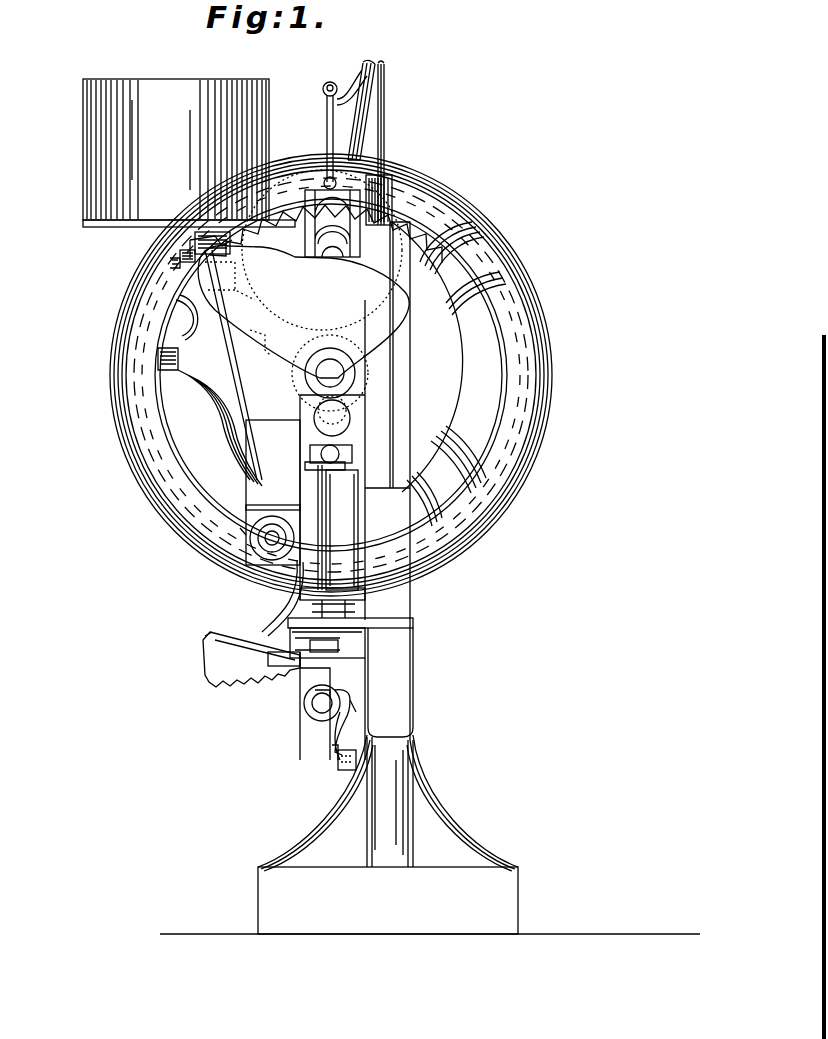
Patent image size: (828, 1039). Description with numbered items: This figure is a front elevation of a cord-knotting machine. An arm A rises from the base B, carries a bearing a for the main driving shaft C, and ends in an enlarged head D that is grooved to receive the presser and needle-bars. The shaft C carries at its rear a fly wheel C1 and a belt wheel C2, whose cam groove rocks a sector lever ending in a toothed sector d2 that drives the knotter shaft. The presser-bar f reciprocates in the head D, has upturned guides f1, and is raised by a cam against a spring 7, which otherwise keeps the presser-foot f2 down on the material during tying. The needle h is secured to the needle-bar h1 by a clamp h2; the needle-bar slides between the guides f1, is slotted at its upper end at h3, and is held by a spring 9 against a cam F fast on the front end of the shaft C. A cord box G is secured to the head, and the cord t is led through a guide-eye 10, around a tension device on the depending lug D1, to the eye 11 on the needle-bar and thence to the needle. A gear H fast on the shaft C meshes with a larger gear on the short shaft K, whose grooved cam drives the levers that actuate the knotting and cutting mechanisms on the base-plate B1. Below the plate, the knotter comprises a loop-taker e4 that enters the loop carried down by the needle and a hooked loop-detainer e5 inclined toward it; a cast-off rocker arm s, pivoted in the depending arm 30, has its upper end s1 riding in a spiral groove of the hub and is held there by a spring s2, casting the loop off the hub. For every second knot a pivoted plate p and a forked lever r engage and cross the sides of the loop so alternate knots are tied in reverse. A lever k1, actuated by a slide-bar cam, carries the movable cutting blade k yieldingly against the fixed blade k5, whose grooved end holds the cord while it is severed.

The cord receptacle or box G is at (86, 183).
The cam F is at (175, 275).
The cord t is at (190, 300).
The bearing a is at (268, 372).
The enlarged head D is at (248, 505).
The guide-eye 10 is at (246, 540).
The depending ear or lug D1 is at (258, 555).
The presser-bar f is at (345, 532).
The slot in needle-bar h3 is at (325, 200).
The spring 9 is at (370, 86).
The needle-bar h1 is at (345, 240).
The spring 7 is at (378, 222).
The upturned longitudinal guides or flanges f1 is at (392, 240).
The short shaft K is at (335, 252).
The gear H is at (362, 363).
The main driving shaft C is at (355, 377).
The belt wheel C2 is at (455, 358).
The fly wheel C1 is at (548, 405).
The clamp h2 is at (322, 455).
The needle h is at (322, 500).
The eye on needle-bar 11 is at (301, 485).
The presser-foot f2 is at (352, 602).
The arm A is at (405, 595).
The toothed sector d2 is at (205, 640).
The lever k1 is at (290, 672).
The plate p is at (300, 660).
The lever r is at (345, 632).
The fixed cutting blade k5 is at (340, 646).
The movable cutting blade k is at (352, 663).
The base-plate B1 is at (414, 675).
The upper end of rocker-arm s1 is at (345, 692).
The loop-detainer e5 is at (306, 708).
The loop-taker e4 is at (312, 710).
The depending arm 30 is at (358, 708).
The rocker arm s is at (342, 728).
The spring s2 is at (340, 768).
The base B is at (412, 790).